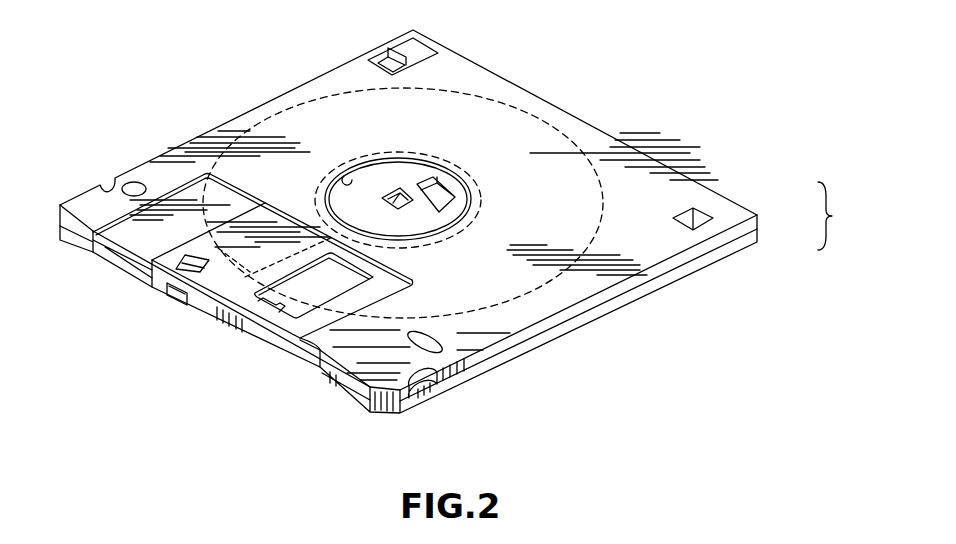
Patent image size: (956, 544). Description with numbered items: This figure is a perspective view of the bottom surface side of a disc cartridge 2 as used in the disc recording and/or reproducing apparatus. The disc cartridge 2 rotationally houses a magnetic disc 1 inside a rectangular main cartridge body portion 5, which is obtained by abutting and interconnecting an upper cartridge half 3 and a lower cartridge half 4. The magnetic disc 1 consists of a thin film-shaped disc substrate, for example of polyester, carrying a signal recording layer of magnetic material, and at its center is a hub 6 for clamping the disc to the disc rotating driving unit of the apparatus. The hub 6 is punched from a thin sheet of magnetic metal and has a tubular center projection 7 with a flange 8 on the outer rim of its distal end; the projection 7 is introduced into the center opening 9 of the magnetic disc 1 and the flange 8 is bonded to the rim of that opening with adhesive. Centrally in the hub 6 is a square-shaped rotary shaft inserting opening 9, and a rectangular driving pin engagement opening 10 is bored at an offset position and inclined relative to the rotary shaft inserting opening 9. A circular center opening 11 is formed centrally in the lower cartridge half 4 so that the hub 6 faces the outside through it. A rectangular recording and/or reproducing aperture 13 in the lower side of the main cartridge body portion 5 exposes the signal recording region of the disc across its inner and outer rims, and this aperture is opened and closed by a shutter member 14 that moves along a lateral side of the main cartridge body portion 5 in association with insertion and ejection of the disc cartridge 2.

The magnetic disc 1 is at (286, 130).
The disc cartridge 2 is at (490, 68).
The upper cartridge half 3 is at (748, 235).
The lower cartridge half 4 is at (757, 216).
The main cartridge body portion 5 is at (833, 216).
The hub 6 is at (392, 175).
The tubular center projection 7 is at (437, 222).
The flange 8 is at (481, 190).
The rotary shaft inserting opening 9 is at (383, 198).
The driving pin engagement opening 10 is at (440, 177).
The center opening 11 is at (346, 176).
The recording and/or reproducing aperture 13 is at (232, 272).
The shutter member 14 is at (280, 330).